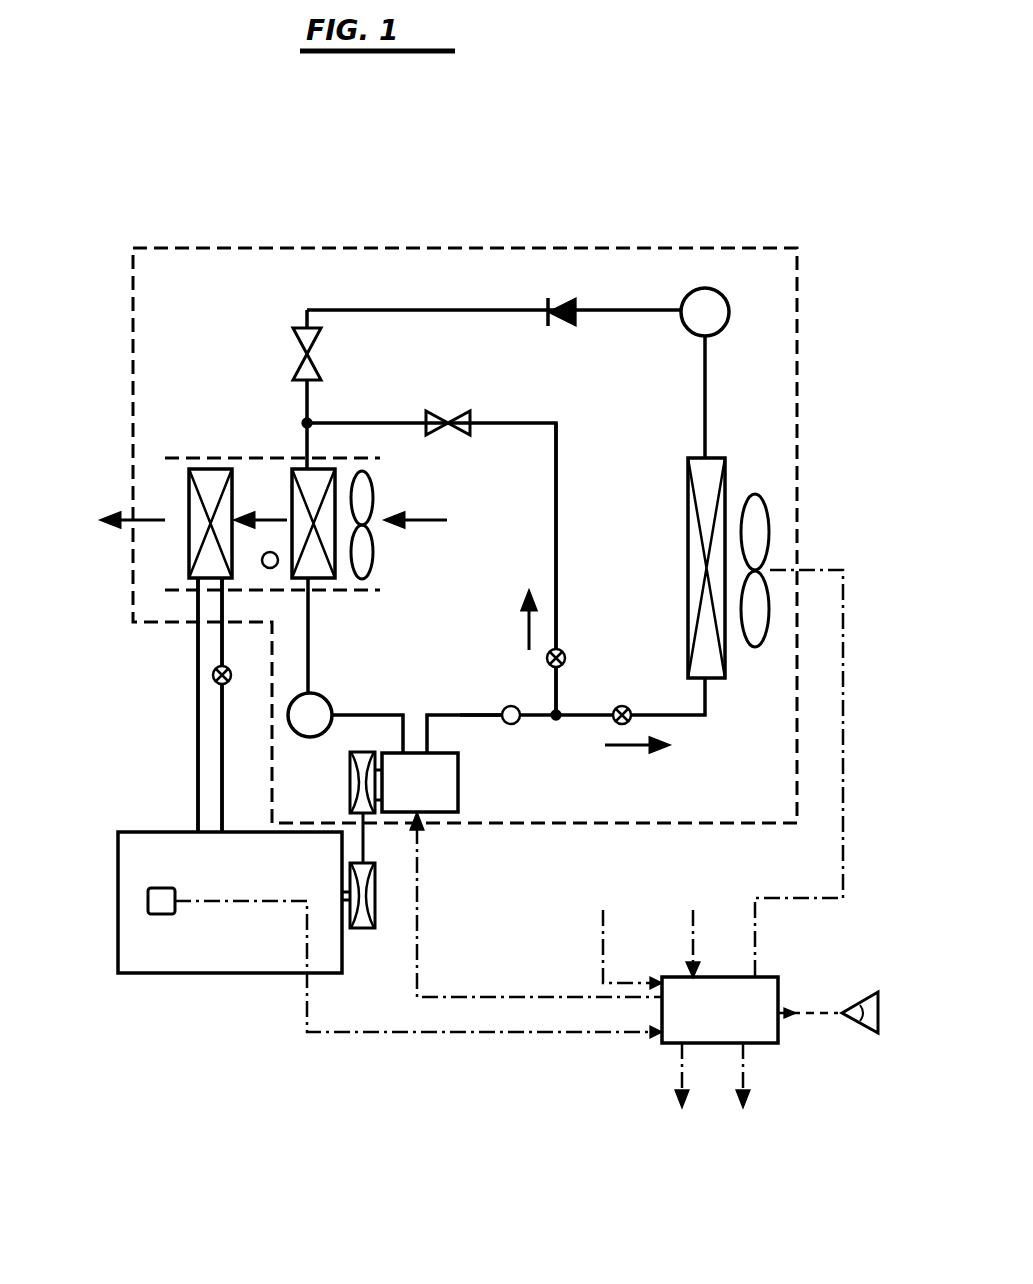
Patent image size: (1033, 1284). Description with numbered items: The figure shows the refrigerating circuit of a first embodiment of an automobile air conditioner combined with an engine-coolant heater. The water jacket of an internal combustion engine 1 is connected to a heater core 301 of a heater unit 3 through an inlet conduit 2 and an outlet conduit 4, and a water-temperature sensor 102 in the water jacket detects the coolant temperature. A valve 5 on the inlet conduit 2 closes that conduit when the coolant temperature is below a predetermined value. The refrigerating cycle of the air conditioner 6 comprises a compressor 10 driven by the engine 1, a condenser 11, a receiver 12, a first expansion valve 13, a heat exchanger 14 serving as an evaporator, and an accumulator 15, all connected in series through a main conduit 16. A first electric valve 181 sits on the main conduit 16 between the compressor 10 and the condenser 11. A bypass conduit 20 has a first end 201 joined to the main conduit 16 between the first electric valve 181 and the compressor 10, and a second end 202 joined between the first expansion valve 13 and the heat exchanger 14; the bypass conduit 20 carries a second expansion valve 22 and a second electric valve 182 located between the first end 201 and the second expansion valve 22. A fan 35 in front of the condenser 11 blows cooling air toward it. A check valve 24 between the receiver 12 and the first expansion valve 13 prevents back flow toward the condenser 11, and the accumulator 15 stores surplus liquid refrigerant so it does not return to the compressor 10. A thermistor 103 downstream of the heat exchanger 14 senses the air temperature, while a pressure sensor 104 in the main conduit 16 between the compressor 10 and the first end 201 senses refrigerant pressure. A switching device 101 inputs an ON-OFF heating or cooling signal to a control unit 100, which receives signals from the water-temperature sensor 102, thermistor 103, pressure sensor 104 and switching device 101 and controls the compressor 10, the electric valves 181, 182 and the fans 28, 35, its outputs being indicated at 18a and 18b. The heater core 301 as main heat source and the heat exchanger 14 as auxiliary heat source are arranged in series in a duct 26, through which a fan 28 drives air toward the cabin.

The internal combustion engine 1 is at (210, 957).
The inlet conduit 2 is at (222, 735).
The heater unit 3 is at (180, 560).
The outlet conduit 4 is at (196, 752).
The valve 5 is at (232, 672).
The air conditioner 6 is at (718, 245).
The compressor 10 is at (440, 800).
The condenser 11 is at (722, 468).
The receiver 12 is at (722, 318).
The first expansion valve 13 is at (293, 345).
The heat exchanger 14 is at (300, 468).
The accumulator 15 is at (322, 700).
The main conduit 16 is at (488, 718).
The output signal a 18a is at (686, 1093).
The output signal b 18b is at (753, 1093).
The bypass conduit 20 is at (558, 525).
The second expansion valve 22 is at (468, 415).
The check valve 24 is at (560, 300).
The duct 26 is at (242, 457).
The fan 28 is at (373, 555).
The fan 35 is at (770, 520).
The control unit 100 is at (765, 988).
The switching device 101 is at (863, 1028).
The water-temperature sensor 102 is at (148, 900).
The thermistor 103 is at (276, 566).
The pressure sensor 104 is at (505, 708).
The first electric valve 181 is at (632, 718).
The second electric valve 182 is at (565, 655).
The first end of bypass conduit 201 is at (558, 712).
The second end of bypass conduit 202 is at (310, 420).
The heater core 301 is at (205, 468).